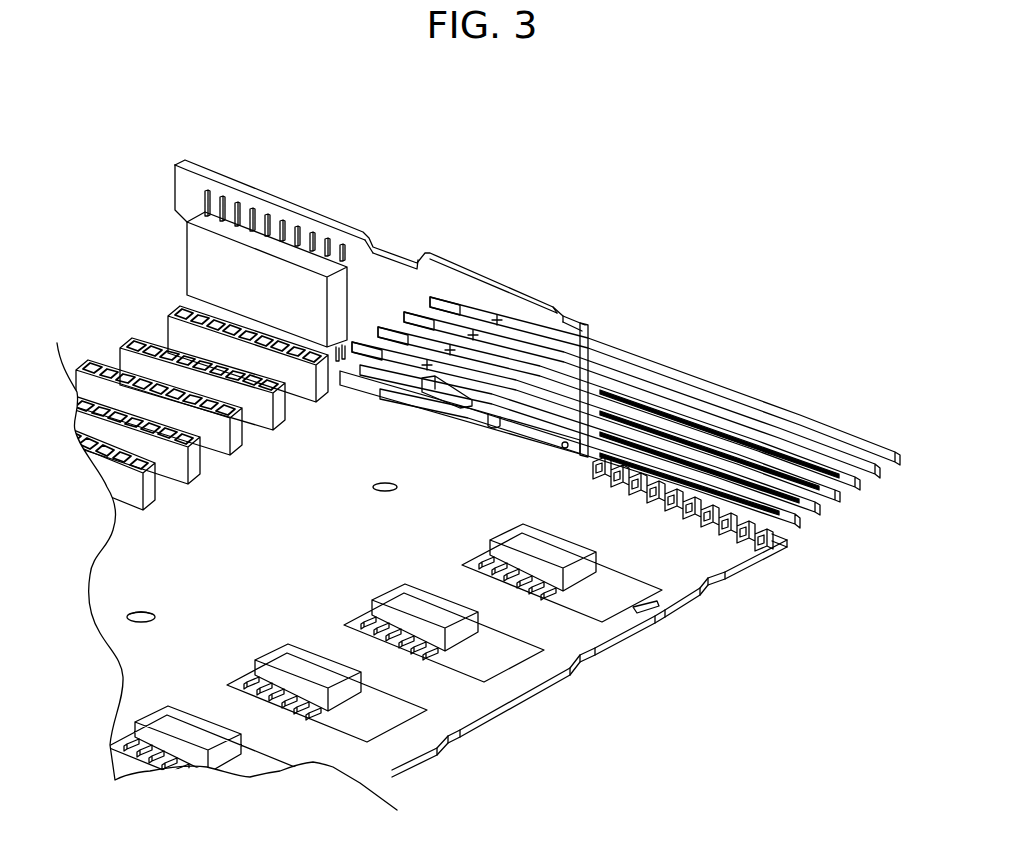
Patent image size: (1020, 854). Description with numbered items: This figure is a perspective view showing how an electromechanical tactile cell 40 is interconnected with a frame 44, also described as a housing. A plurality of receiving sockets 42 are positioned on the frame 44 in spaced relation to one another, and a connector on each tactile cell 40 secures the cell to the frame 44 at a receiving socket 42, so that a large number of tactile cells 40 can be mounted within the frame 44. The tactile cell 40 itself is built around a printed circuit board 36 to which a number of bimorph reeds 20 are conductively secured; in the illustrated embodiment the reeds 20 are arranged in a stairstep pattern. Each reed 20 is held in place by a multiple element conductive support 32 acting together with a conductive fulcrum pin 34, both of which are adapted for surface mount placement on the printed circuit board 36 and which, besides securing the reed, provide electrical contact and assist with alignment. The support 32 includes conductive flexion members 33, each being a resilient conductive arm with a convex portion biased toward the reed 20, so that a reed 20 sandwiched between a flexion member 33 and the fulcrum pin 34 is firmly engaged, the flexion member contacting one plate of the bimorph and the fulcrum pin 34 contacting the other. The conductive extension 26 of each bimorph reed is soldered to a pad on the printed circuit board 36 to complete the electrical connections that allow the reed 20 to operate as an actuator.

The bimorph reed 20 is at (778, 408).
The conductive extension of the bimorph reed 26 is at (440, 300).
The multiple element conductive support 32 is at (470, 407).
The conductive flexion member 33 is at (426, 385).
The conductive fulcrum pin 34 is at (496, 320).
The printed circuit board 36 is at (377, 222).
The electromechanical tactile cell 40 is at (537, 350).
The receiving socket 42 is at (296, 380).
The frame 44 is at (292, 569).